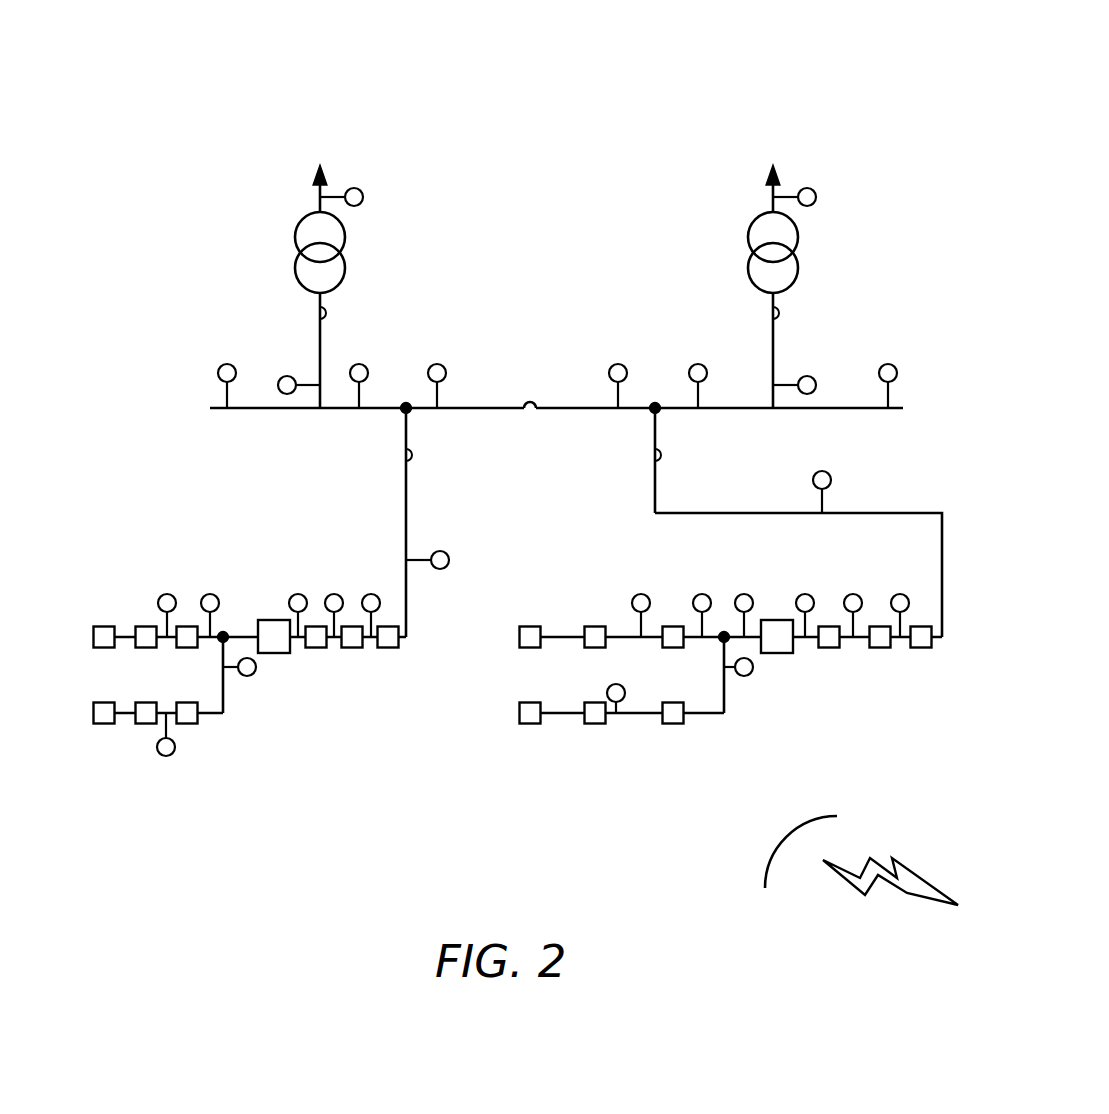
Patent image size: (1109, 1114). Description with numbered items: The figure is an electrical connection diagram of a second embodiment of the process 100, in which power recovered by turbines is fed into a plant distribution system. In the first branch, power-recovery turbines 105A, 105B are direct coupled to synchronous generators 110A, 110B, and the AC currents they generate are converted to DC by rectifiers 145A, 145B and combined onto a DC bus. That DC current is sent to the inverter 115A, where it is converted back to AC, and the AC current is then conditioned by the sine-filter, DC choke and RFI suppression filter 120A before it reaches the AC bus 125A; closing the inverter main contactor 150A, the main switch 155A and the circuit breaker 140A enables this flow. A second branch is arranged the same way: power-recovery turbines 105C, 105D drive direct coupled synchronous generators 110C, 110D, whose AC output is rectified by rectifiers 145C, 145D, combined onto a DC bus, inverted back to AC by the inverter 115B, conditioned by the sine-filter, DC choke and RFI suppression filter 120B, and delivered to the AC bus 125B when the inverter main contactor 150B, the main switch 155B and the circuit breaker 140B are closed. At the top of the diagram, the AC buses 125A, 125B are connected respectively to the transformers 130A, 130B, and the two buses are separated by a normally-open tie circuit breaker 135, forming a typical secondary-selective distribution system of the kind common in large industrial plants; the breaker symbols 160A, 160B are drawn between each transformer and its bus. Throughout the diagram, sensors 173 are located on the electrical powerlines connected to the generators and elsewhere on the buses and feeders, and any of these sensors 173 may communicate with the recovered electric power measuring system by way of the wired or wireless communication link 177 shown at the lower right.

The process 100 is at (829, 50).
The power-recovery turbine 105A is at (93, 636).
The power-recovery turbine 105B is at (93, 714).
The power-recovery turbine 105C is at (530, 627).
The power-recovery turbine 105D is at (530, 724).
The synchronous generator 110A is at (146, 648).
The synchronous generator 110B is at (146, 724).
The synchronous generator 110C is at (595, 627).
The synchronous generator 110D is at (595, 724).
The inverter 115A is at (273, 654).
The inverter 115B is at (777, 654).
The sine-filter, DC choke and RFI suppression filter 120A is at (316, 648).
The sine-filter, DC choke and RFI suppression filter 120B is at (829, 648).
The AC bus 125A is at (467, 410).
The AC bus 125B is at (597, 410).
The transformer 130A is at (346, 267).
The transformer 130B is at (799, 267).
The normally-open tie circuit breaker 135 is at (531, 402).
The circuit breaker 140A is at (402, 456).
The circuit breaker 140B is at (662, 454).
The rectifier 145A is at (180, 648).
The rectifier 145B is at (190, 724).
The rectifier 145C is at (683, 643).
The rectifier 145D is at (673, 724).
The inverter main contactor 150A is at (352, 648).
The inverter main contactor 150B is at (880, 648).
The main switch 155A is at (388, 648).
The main switch 155B is at (921, 648).
The transformer breaker 160A is at (316, 314).
The transformer breaker 160B is at (779, 313).
The sensor 173 is at (362, 191).
The wired or wireless communication 177 is at (928, 895).